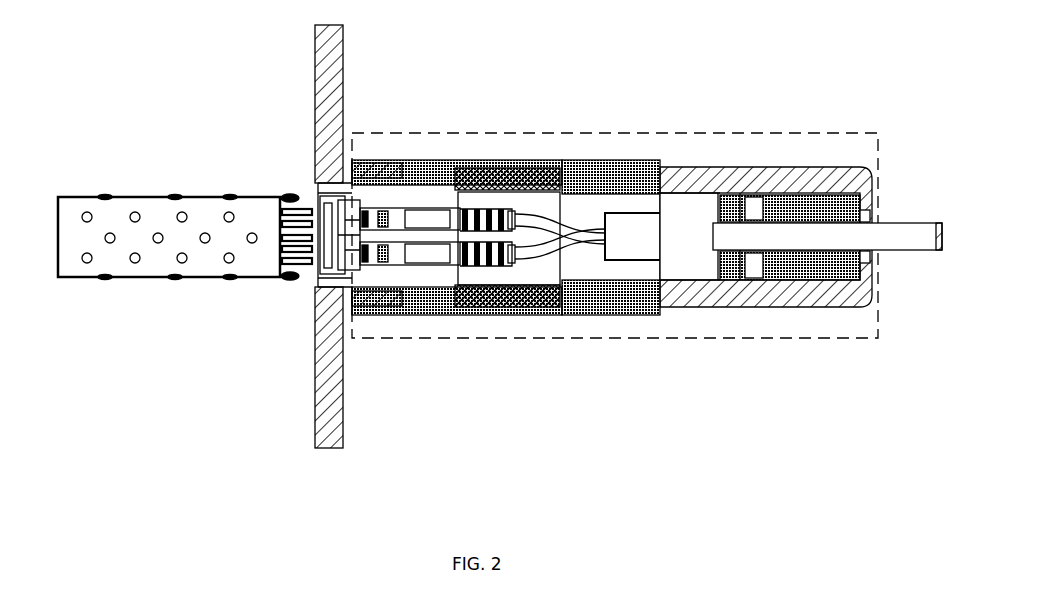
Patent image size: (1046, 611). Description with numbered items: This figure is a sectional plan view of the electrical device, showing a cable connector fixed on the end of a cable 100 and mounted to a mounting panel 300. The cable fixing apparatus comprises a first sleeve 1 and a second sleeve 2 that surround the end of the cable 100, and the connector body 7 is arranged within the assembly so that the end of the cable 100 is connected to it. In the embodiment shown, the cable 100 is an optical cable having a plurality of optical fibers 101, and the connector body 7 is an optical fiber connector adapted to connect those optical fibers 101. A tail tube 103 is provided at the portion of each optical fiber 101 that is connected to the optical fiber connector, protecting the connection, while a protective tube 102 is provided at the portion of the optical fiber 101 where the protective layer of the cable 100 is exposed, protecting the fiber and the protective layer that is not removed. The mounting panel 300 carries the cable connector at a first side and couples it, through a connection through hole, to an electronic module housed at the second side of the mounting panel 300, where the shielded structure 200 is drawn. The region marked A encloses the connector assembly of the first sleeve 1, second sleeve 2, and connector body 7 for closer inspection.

The enlarged region A is at (468, 133).
The first sleeve 1 is at (565, 165).
The second sleeve 2 is at (790, 185).
The connector body 7 is at (312, 270).
The cable 100 is at (908, 232).
The optical fibers 101 is at (543, 253).
The protective tube 102 is at (687, 245).
The tail tube 103 is at (430, 251).
The cage 200 is at (202, 210).
The mounting panel 300 is at (335, 175).